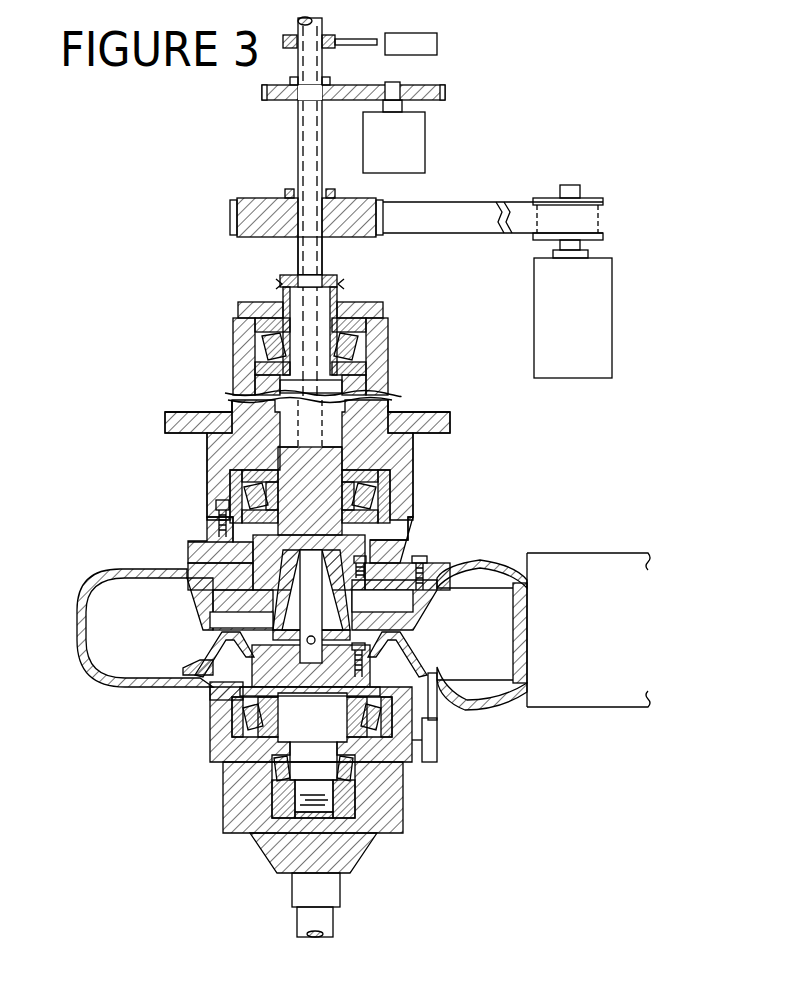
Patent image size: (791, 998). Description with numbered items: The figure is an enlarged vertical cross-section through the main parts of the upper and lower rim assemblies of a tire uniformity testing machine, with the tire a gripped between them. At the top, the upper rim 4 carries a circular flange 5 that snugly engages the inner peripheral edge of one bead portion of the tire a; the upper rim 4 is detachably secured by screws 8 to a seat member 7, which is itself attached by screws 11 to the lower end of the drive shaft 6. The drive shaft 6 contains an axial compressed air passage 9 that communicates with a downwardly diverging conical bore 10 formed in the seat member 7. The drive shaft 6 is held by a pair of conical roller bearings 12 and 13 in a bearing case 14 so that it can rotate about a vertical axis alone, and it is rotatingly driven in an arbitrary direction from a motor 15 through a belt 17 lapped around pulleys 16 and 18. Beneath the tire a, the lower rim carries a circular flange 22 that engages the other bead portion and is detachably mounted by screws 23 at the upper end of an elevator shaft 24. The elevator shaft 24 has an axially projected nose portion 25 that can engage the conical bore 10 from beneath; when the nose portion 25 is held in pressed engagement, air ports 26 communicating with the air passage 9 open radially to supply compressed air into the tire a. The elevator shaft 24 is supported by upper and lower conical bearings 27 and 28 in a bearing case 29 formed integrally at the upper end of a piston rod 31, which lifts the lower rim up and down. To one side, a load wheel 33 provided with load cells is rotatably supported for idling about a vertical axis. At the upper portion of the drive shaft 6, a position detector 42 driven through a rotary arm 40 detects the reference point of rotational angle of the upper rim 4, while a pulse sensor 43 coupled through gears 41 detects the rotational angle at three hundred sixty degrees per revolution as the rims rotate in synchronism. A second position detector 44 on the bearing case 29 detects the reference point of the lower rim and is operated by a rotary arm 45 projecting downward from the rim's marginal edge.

The tire a is at (77, 628).
The upper rim 4 is at (190, 608).
The circular flange 5 is at (437, 600).
The drive shaft 6 is at (335, 389).
The seat member 7 is at (190, 563).
The screws 8 is at (424, 558).
The compressed air passage 9 is at (305, 472).
The conical bore 10 is at (273, 606).
The screws 11 is at (366, 563).
The conical roller bearing 12 is at (345, 332).
The conical roller bearing 13 is at (392, 505).
The bearing case 14 is at (388, 358).
The motor 15 is at (608, 330).
The pulley 16 is at (592, 198).
The belt 17 is at (477, 202).
The pulley 18 is at (260, 212).
The circular flange 22 is at (196, 660).
The screws 23 is at (366, 660).
The elevator shaft 24 is at (268, 848).
The nose portion 25 is at (420, 636).
The air ports 26 is at (252, 666).
The upper conical bearing 27 is at (213, 730).
The lower conical bearing 28 is at (272, 770).
The bearing case 29 is at (220, 765).
The piston rod 31 is at (320, 883).
The load wheel 33 is at (570, 568).
The rotary arm 40 is at (365, 38).
The gears 41 is at (366, 85).
The position detector 42 is at (437, 45).
The pulse sensor 43 is at (415, 148).
The position detector 44 is at (437, 745).
The rotary arm 45 is at (440, 700).